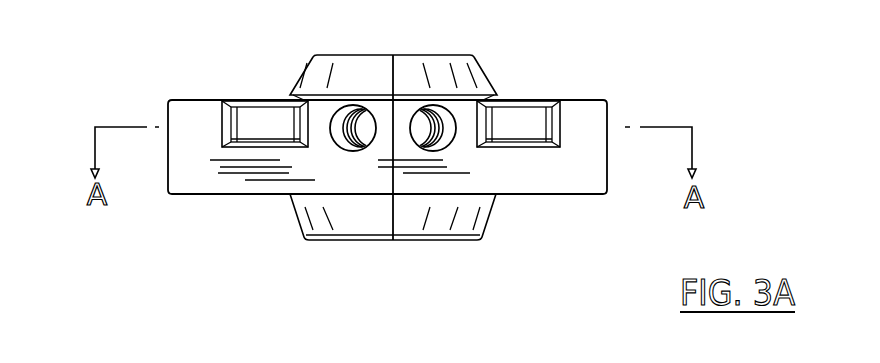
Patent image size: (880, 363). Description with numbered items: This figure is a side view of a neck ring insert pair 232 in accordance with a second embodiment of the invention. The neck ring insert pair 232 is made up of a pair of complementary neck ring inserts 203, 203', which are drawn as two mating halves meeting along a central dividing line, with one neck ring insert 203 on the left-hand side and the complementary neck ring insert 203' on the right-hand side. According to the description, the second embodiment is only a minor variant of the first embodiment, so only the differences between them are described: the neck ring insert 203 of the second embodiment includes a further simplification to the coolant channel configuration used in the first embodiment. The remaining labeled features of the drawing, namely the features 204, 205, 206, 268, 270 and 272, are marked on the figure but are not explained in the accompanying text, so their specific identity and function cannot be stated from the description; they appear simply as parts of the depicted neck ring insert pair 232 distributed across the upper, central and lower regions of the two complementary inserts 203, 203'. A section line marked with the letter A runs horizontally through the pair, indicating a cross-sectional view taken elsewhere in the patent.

The neck ring insert 203 is at (278, 204).
The neck ring insert 203' is at (520, 191).
The upper flange 204 is at (322, 75).
The connector body 205 is at (187, 175).
The lower flange 206 is at (341, 228).
The neck ring insert pair 232 is at (561, 66).
The lip 268 is at (425, 250).
The top surface 270 is at (185, 90).
The bottom surface 272 is at (195, 204).